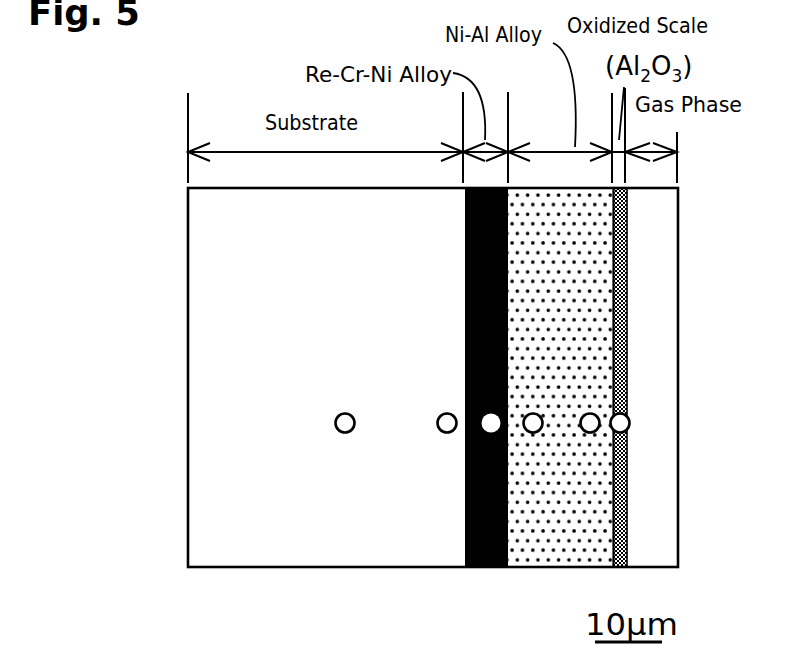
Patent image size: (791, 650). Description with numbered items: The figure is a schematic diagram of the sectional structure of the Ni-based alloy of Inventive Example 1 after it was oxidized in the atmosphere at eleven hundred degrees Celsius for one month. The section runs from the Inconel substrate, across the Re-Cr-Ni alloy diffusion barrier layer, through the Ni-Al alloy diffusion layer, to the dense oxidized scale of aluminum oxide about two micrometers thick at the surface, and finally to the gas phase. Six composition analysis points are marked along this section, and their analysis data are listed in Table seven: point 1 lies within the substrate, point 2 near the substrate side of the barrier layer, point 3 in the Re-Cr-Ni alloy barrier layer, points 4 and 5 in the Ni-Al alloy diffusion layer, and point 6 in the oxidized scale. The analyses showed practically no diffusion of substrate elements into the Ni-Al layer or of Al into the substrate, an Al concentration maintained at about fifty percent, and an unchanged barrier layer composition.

The analysis point 1 is at (344, 511).
The analysis point 2 is at (445, 511).
The analysis point 3 is at (485, 511).
The analysis point 4 is at (534, 511).
The analysis point 5 is at (590, 511).
The analysis point 6 is at (627, 511).